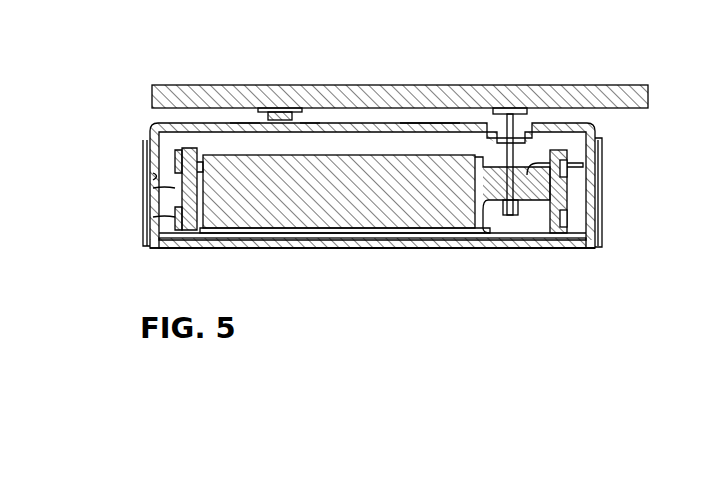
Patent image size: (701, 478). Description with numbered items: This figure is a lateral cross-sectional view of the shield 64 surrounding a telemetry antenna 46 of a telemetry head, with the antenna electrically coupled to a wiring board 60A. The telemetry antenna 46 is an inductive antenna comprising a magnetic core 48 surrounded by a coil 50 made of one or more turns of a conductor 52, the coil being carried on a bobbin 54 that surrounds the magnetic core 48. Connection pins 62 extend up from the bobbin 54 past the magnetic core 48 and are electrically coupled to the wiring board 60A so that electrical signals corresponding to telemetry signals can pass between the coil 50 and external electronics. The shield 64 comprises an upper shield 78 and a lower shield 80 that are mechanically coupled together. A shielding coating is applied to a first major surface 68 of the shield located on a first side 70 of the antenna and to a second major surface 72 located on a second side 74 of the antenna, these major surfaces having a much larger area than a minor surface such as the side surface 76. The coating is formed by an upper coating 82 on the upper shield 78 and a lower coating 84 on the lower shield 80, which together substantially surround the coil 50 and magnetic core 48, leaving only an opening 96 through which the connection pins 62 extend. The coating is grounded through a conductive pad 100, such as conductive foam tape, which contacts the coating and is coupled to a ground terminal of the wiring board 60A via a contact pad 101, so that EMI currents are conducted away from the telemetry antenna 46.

The telemetry antenna 46 is at (549, 143).
The magnetic core 48 is at (345, 194).
The coil 50 is at (575, 219).
The conductor 52 is at (173, 163).
The bobbin 54 is at (190, 185).
The wiring board 60A is at (498, 97).
The connection pins 62 is at (507, 196).
The shield 64 is at (146, 114).
The first major surface 68 is at (245, 124).
The first side 70 is at (381, 143).
The second major surface 72 is at (228, 236).
The second side 74 is at (383, 249).
The side surface 76 is at (599, 185).
The upper shield 78 is at (403, 130).
The lower shield 80 is at (559, 250).
The upper coating 82 is at (308, 123).
The lower coating 84 is at (157, 173).
The opening 96 is at (520, 122).
The conductive pad 100 is at (279, 113).
The contact pad 101 is at (283, 114).